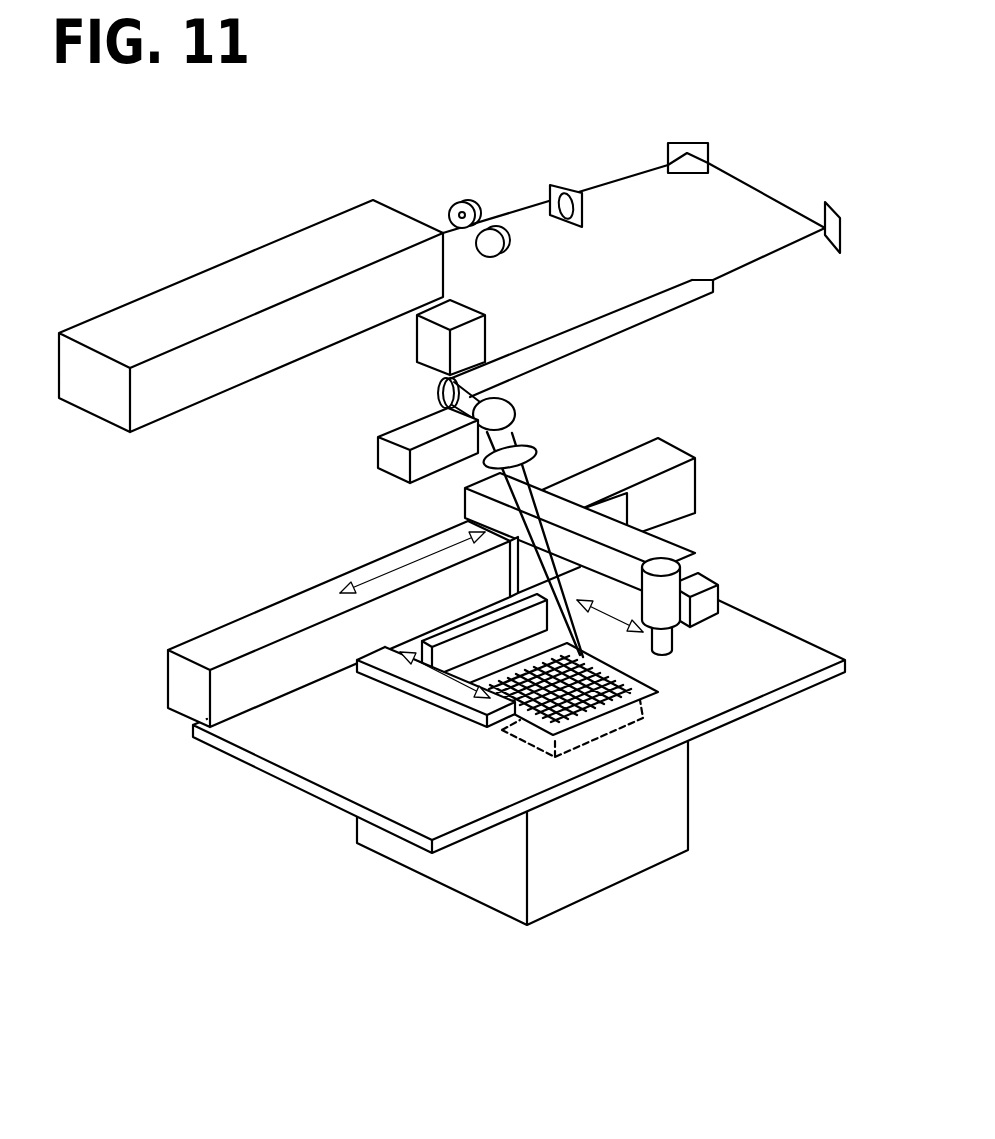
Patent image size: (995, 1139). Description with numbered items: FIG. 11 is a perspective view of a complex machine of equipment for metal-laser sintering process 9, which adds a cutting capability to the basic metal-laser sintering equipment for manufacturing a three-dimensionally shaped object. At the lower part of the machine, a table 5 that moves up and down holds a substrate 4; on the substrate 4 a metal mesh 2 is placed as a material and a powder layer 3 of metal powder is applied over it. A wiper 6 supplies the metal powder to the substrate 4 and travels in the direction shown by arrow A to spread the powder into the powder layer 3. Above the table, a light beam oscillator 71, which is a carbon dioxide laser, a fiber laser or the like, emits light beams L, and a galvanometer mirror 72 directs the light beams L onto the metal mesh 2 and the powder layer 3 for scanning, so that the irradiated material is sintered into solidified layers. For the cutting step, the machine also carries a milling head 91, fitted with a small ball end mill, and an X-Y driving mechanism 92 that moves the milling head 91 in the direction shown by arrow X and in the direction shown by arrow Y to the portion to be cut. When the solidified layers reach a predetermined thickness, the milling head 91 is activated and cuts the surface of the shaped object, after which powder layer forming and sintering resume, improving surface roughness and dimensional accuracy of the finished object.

The laser processing apparatus 9 is at (80, 170).
The light beam oscillator 71 is at (190, 297).
The galvanometer mirror 72 is at (470, 427).
The light beams L is at (745, 181).
The X-Y driving mechanism 92 is at (567, 525).
The milling head 91 is at (673, 642).
The arrow X is at (403, 540).
The arrow Y is at (664, 642).
The arrow A is at (440, 670).
The wiper 6 is at (480, 645).
The substrate 4 is at (657, 697).
The powder layer 3 is at (643, 700).
The metal mesh 2 is at (597, 717).
The table 5 is at (590, 752).